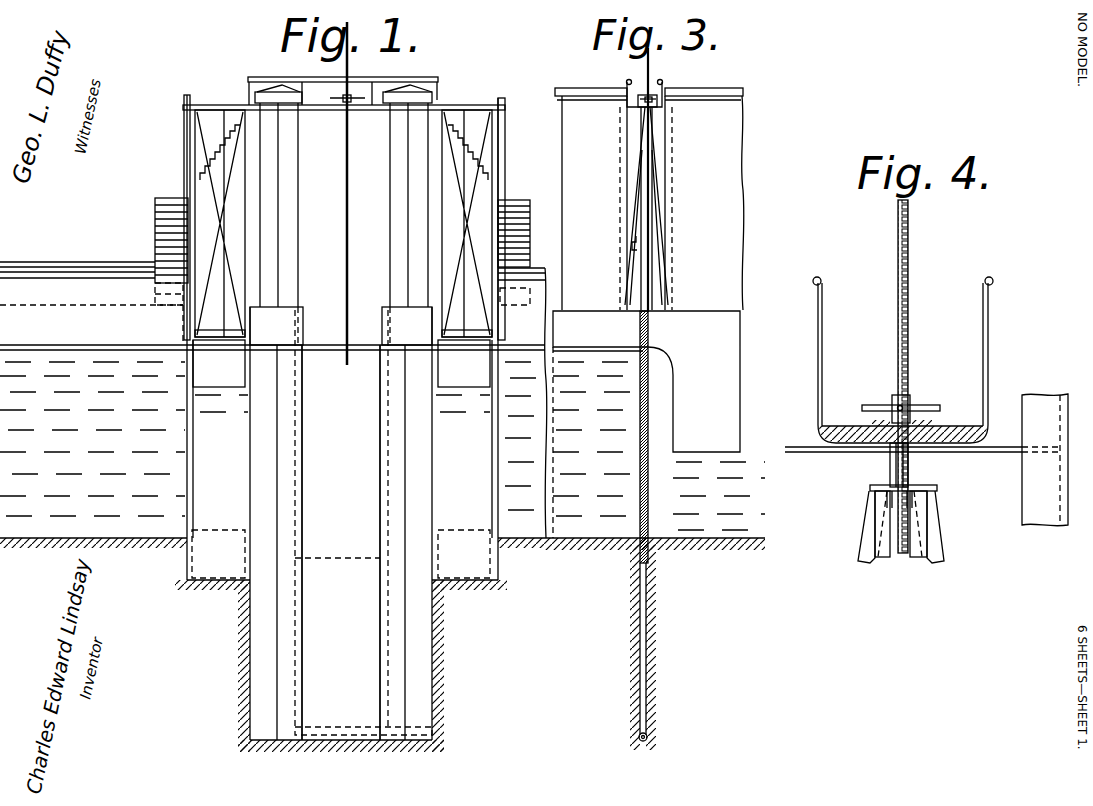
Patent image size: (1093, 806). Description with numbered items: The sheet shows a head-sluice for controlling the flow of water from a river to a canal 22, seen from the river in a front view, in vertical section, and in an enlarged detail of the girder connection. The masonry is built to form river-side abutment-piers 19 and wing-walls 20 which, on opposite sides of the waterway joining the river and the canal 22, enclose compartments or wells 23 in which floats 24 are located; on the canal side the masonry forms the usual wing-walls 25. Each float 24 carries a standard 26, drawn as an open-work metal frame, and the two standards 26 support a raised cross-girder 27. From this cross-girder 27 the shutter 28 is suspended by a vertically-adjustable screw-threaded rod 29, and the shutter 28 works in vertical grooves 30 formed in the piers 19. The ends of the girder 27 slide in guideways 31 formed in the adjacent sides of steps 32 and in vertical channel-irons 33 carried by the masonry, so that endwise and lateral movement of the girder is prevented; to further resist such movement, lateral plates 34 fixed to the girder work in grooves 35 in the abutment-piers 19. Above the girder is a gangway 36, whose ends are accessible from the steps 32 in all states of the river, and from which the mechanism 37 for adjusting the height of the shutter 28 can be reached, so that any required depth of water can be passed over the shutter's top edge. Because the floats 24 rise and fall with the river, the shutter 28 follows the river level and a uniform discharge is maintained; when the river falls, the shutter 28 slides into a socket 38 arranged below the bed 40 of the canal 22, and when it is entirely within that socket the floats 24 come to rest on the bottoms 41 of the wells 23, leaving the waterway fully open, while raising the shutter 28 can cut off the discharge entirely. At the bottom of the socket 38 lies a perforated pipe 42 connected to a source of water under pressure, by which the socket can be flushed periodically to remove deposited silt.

In FIG. 1, the abutment-piers 19 is at (341, 412).
In FIG. 1, the wing-walls 20 is at (273, 400).
In FIG. 3, the canal 22 is at (727, 395).
In FIG. 1, the compartments or wells 23 is at (272, 337).
In FIG. 1, the floats 24 is at (341, 459).
In FIG. 3, the wing-walls 25 is at (649, 199).
In FIG. 1, the standards 26 is at (343, 223).
In FIG. 3, the standards 26 is at (648, 200).
In FIG. 4, the standards 26 is at (868, 519).
In FIG. 1, the cross-girder 27 is at (248, 106).
In FIG. 4, the cross-girder 27 is at (909, 470).
In FIG. 1, the shutter 28 is at (341, 542).
In FIG. 3, the shutter 28 is at (648, 427).
In FIG. 1, the screw-threaded rod 29 is at (346, 254).
In FIG. 3, the screw-threaded rod 29 is at (652, 70).
In FIG. 4, the screw-threaded rod 29 is at (908, 318).
In FIG. 1, the vertical grooves 30 is at (385, 330).
In FIG. 3, the vertical grooves 30 is at (650, 337).
In FIG. 1, the guideways 31 is at (184, 206).
In FIG. 1, the steps 32 is at (155, 226).
In FIG. 3, the steps 32 is at (634, 245).
In FIG. 1, the vertical channel-irons 33 is at (185, 126).
In FIG. 3, the lateral plates 34 is at (658, 135).
In FIG. 4, the lateral plates 34 is at (922, 461).
In FIG. 3, the grooves 35 is at (620, 127).
In FIG. 4, the grooves 35 is at (1048, 488).
In FIG. 1, the gangway 36 is at (303, 100).
In FIG. 3, the gangway 36 is at (660, 88).
In FIG. 4, the gangway 36 is at (903, 360).
In FIG. 1, the mechanism 37 is at (344, 103).
In FIG. 3, the mechanism 37 is at (642, 90).
In FIG. 4, the mechanism 37 is at (910, 400).
In FIG. 1, the socket 38 is at (341, 655).
In FIG. 3, the socket 38 is at (647, 638).
In FIG. 1, the bed 40 is at (272, 543).
In FIG. 3, the bed 40 is at (680, 536).
In FIG. 1, the bottoms 41 is at (200, 603).
In FIG. 1, the perforated pipe 42 is at (345, 742).
In FIG. 3, the perforated pipe 42 is at (648, 737).